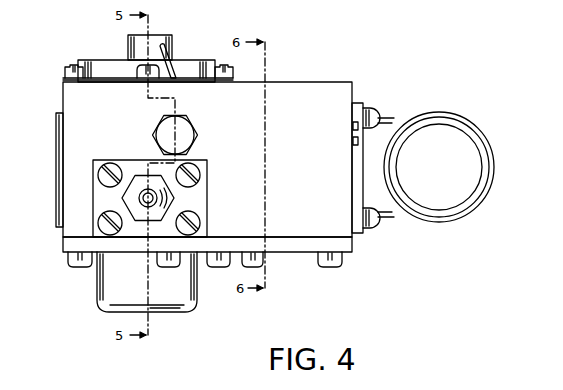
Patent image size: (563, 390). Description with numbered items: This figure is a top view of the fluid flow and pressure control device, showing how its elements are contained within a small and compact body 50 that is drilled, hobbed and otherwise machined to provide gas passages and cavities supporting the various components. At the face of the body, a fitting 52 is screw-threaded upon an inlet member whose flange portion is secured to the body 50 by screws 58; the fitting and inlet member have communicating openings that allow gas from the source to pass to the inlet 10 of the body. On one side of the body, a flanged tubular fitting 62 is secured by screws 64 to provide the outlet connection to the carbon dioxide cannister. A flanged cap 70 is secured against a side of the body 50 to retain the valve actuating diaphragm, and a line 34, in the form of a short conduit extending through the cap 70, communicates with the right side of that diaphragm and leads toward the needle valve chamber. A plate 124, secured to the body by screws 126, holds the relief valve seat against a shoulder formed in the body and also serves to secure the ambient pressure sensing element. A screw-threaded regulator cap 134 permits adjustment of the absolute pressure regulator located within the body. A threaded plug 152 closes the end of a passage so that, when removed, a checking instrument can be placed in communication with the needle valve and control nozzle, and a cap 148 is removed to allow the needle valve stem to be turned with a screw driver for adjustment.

The inlet 10 is at (141, 198).
The line 34 is at (170, 55).
The body 50 is at (298, 90).
The fitting 52 is at (166, 198).
The screws 58 is at (110, 163).
The flanged tubular fitting 62 is at (400, 118).
The screws 64 is at (369, 104).
The flanged cap 70 is at (102, 64).
The plate 124 is at (97, 282).
The screws 126 is at (68, 258).
The regulator cap 134 is at (56, 211).
The cap 148 is at (191, 133).
The threaded plug 152 is at (352, 136).